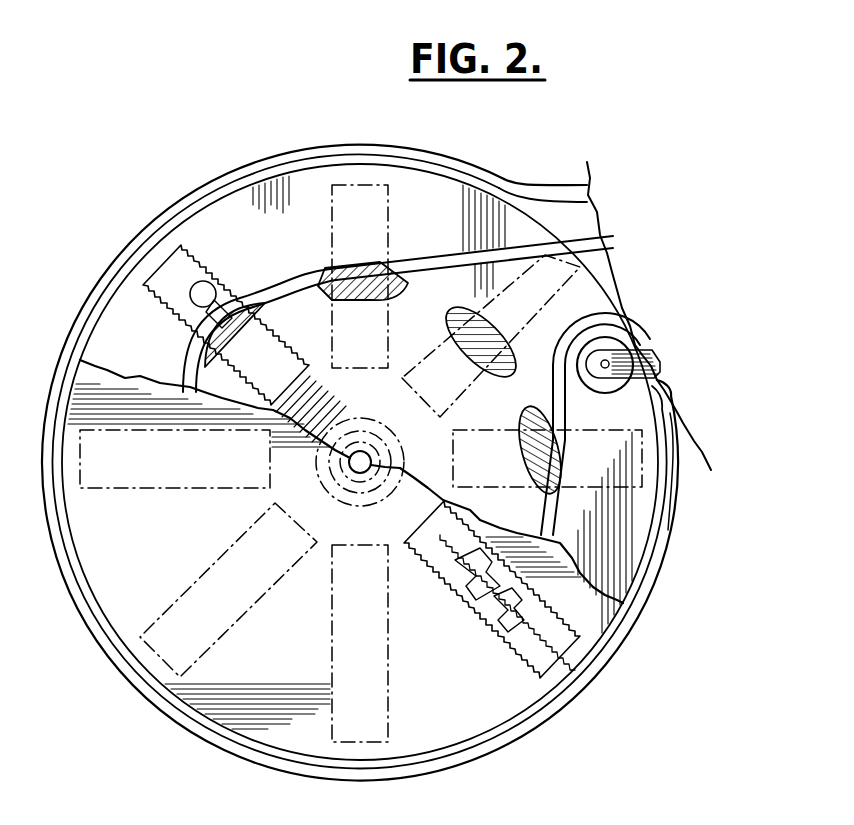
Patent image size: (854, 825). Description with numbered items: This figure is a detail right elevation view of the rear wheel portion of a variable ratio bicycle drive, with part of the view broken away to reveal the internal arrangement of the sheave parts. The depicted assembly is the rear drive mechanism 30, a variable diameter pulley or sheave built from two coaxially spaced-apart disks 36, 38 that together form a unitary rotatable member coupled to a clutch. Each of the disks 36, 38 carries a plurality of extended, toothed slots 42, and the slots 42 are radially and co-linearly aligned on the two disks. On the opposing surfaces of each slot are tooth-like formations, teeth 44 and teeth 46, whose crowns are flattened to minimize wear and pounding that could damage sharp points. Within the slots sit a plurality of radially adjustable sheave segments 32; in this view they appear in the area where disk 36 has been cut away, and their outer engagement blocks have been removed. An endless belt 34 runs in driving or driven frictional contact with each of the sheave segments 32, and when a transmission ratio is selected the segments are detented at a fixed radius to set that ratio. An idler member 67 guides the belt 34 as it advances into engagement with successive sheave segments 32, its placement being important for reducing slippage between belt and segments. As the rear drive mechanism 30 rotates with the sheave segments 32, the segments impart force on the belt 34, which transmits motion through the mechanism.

The rear drive mechanism 30 is at (206, 170).
The sheave segments 32 is at (266, 288).
The belt 34 is at (449, 245).
The disk 36 is at (295, 667).
The disk 38 is at (128, 312).
The toothed slots 42 is at (152, 257).
The teeth 44 is at (168, 306).
The teeth 46 is at (207, 273).
The idler member 67 is at (618, 386).